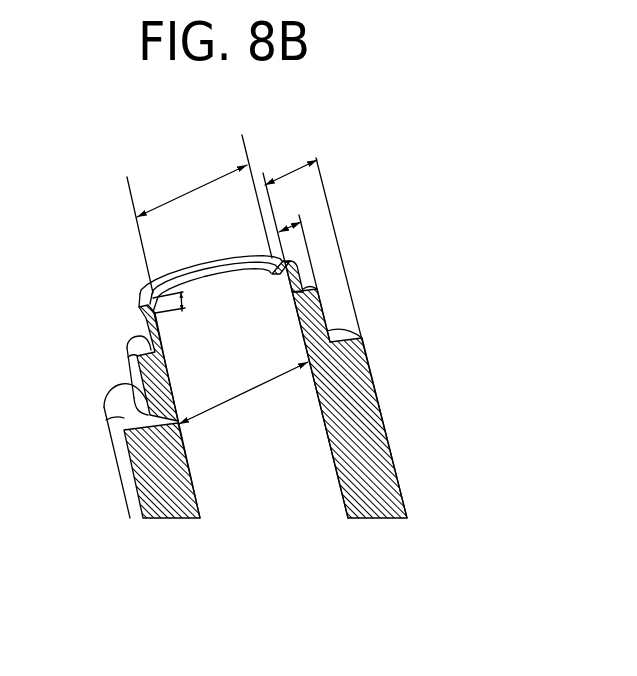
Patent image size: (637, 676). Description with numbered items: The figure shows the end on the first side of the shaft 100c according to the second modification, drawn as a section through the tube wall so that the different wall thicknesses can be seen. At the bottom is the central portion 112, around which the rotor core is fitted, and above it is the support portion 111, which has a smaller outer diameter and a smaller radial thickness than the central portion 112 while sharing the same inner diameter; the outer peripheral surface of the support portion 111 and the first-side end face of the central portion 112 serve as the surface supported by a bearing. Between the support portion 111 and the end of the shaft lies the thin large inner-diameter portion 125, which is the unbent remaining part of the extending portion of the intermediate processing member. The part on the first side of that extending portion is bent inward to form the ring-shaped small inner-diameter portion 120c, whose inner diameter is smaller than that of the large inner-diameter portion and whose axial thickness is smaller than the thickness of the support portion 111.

The shaft 100c is at (62, 214).
The small inner-diameter portion 120c is at (217, 257).
The thin large inner-diameter portion 125 is at (151, 333).
The support portion 111 is at (128, 367).
The central portion 112 is at (114, 452).